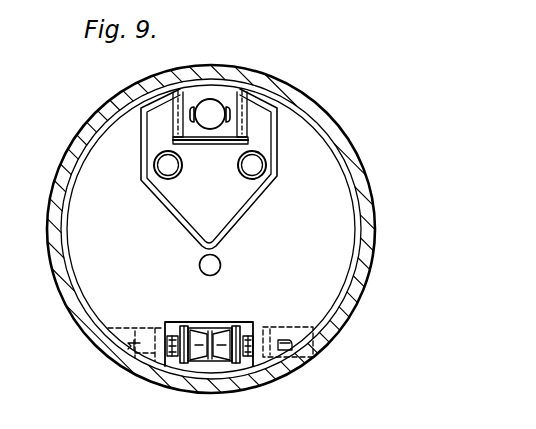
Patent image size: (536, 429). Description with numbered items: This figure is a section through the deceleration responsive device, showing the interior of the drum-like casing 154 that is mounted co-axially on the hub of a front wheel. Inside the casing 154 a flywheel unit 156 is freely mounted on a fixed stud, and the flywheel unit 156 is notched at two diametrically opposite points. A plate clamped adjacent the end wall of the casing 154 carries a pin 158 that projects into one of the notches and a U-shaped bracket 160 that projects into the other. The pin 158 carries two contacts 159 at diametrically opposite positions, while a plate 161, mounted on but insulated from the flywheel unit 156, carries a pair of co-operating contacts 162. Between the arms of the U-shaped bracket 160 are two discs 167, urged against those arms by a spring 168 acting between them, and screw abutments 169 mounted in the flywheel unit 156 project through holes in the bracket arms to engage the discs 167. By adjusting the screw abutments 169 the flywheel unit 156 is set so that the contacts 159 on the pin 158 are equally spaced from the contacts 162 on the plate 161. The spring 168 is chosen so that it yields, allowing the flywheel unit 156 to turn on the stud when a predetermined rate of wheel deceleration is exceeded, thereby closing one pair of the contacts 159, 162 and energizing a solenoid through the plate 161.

The drum-like casing 154 is at (372, 230).
The flywheel unit 156 is at (325, 166).
The pin 158 is at (210, 120).
The contacts 159 is at (229, 106).
The U-shaped bracket 160 is at (272, 342).
The plate 161 is at (262, 125).
The co-operating contacts 162 is at (202, 80).
The discs 167 is at (185, 333).
The spring 168 is at (211, 333).
The screw abutments 169 is at (165, 338).